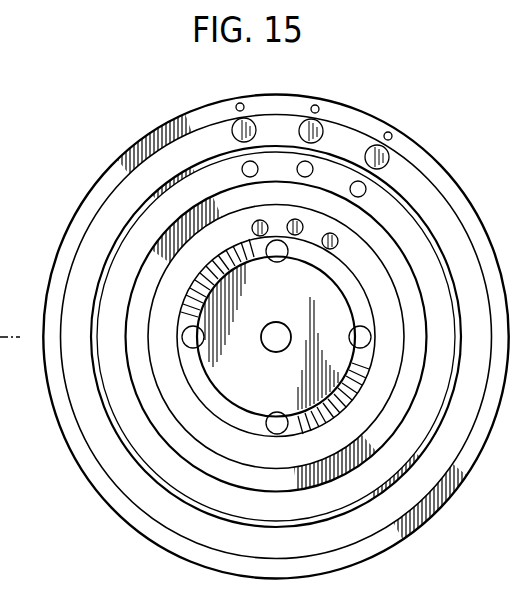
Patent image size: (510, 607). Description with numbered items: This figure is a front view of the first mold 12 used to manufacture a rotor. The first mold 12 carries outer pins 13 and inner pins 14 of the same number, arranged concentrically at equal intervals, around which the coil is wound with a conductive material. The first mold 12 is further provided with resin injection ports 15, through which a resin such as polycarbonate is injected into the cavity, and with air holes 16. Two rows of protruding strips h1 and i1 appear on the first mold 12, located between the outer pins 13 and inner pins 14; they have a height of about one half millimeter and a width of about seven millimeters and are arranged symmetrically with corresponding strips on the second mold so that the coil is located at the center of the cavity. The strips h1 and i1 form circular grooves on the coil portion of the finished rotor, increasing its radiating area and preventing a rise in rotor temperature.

The first mold 12 is at (80, 267).
The outer pins 13 is at (232, 131).
The inner pins 14 is at (251, 228).
The resin injection ports 15 is at (242, 170).
The air holes 16 is at (239, 103).
The protruding strip h1 is at (146, 280).
The protruding strip i1 is at (136, 212).